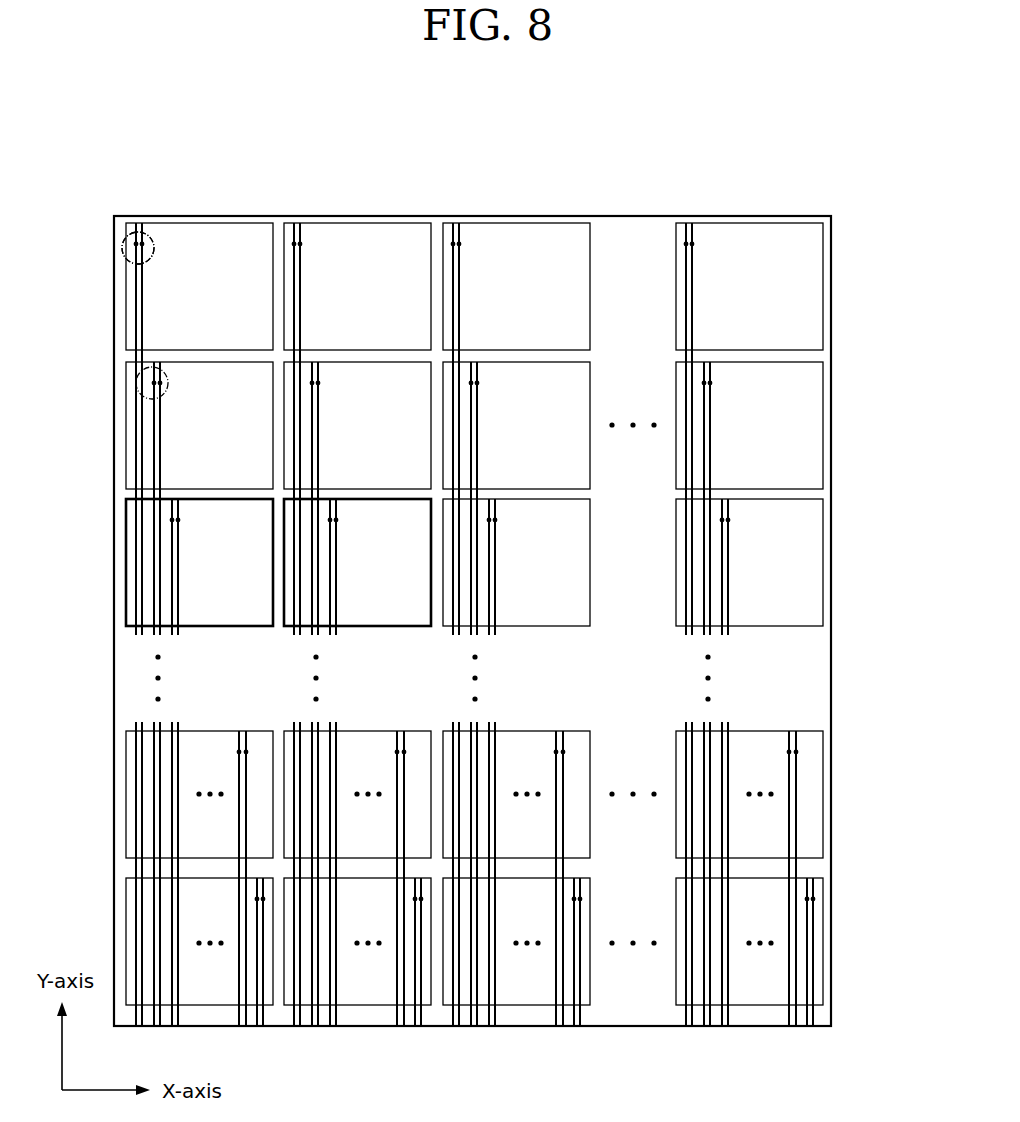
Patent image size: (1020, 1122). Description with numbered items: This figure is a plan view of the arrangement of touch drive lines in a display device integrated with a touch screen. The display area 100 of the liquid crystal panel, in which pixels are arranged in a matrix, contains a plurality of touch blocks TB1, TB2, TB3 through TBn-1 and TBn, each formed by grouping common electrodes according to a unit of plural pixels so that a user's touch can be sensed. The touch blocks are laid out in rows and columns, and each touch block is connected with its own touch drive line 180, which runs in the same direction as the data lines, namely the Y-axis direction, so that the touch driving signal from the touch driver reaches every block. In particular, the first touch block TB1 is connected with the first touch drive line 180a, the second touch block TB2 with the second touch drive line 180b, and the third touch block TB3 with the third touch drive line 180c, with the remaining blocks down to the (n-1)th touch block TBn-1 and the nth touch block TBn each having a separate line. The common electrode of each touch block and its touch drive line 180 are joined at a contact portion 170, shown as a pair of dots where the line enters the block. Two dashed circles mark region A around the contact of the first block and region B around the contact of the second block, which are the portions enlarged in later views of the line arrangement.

The display area 100 is at (500, 194).
The contact portion 170 is at (150, 245).
The touch drive line 180 is at (813, 1040).
The first touch drive line 180a is at (145, 340).
The second touch drive line 180b is at (162, 478).
The third touch drive line 180c is at (180, 563).
The region A is at (122, 256).
The region B is at (130, 393).
The first touch block TB1 is at (175, 298).
The second touch block TB2 is at (175, 438).
The third touch block TB3 is at (200, 592).
The (n-1)th touch block TBn-1 is at (767, 828).
The nth touch block TBn is at (767, 980).